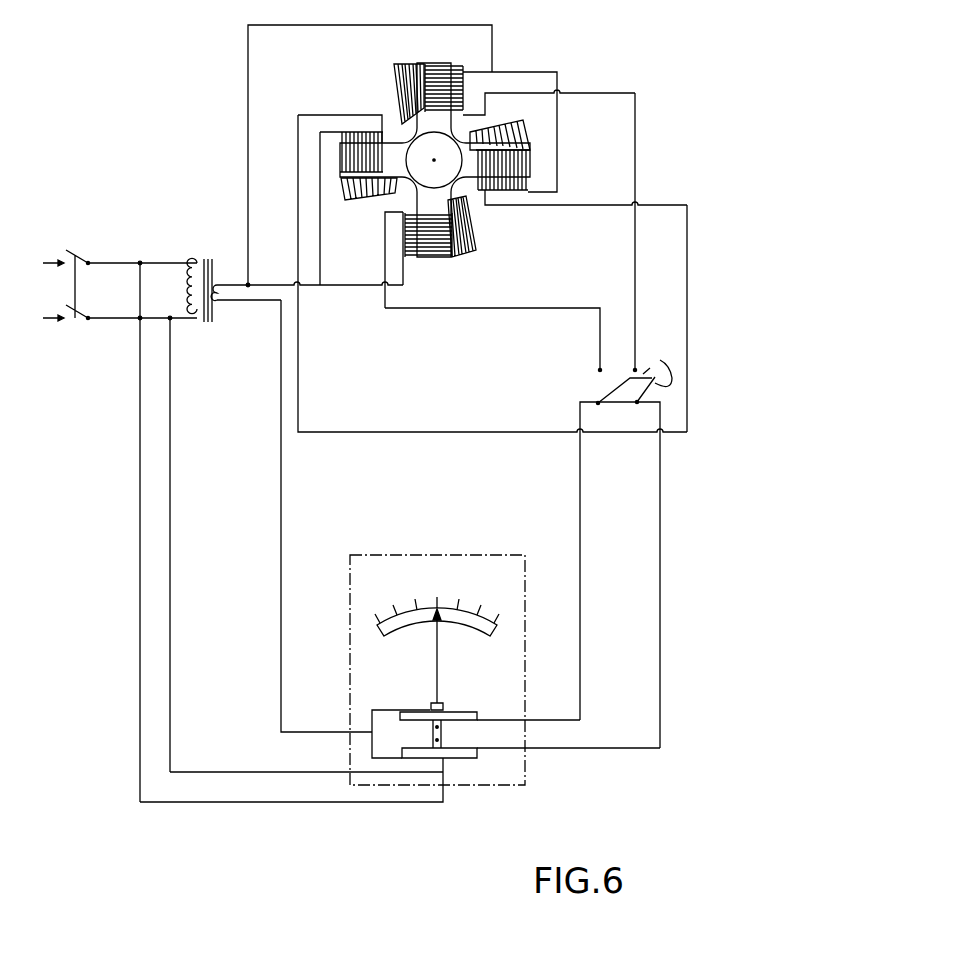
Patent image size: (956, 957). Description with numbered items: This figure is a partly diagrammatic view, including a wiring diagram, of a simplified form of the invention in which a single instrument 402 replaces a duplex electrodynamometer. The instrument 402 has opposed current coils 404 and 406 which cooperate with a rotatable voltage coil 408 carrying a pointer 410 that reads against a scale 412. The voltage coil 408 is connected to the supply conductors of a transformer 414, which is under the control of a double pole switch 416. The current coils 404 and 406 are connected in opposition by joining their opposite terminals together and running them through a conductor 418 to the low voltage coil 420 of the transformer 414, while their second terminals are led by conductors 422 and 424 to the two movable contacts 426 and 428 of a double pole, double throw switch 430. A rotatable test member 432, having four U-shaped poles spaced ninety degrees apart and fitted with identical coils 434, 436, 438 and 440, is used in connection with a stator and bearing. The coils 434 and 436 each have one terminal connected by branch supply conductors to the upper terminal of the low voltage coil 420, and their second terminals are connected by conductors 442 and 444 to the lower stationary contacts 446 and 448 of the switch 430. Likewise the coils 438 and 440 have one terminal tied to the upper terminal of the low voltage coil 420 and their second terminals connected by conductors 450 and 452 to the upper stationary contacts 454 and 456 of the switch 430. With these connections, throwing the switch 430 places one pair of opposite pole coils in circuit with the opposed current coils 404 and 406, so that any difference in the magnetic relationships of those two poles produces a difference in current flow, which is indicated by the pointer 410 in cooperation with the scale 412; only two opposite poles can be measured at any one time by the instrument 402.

The instrument 402 is at (513, 787).
The current coil 404 is at (463, 712).
The current coil 406 is at (467, 757).
The rotatable voltage coil 408 is at (432, 742).
The pointer 410 is at (438, 650).
The scale 412 is at (397, 625).
The transformer 414 is at (190, 292).
The double pole switch 416 is at (75, 292).
The conductor 418 is at (280, 574).
The low voltage coil 420 is at (218, 302).
The conductor 422 is at (578, 514).
The conductor 424 is at (664, 533).
The movable contact 426 is at (612, 383).
The movable contact 428 is at (659, 365).
The double pole, double throw switch 430 is at (602, 545).
The rotatable test member 432 is at (404, 128).
The coil 434 is at (368, 132).
The coil 436 is at (498, 192).
The coil 438 is at (410, 255).
The coil 440 is at (463, 88).
The conductor 442 is at (402, 433).
The conductor 444 is at (688, 238).
The lower stationary contact 446 is at (602, 432).
The lower stationary contact 448 is at (637, 432).
The conductor 450 is at (473, 308).
The conductor 452 is at (637, 150).
The upper stationary contact 454 is at (598, 370).
The upper stationary contact 456 is at (636, 368).